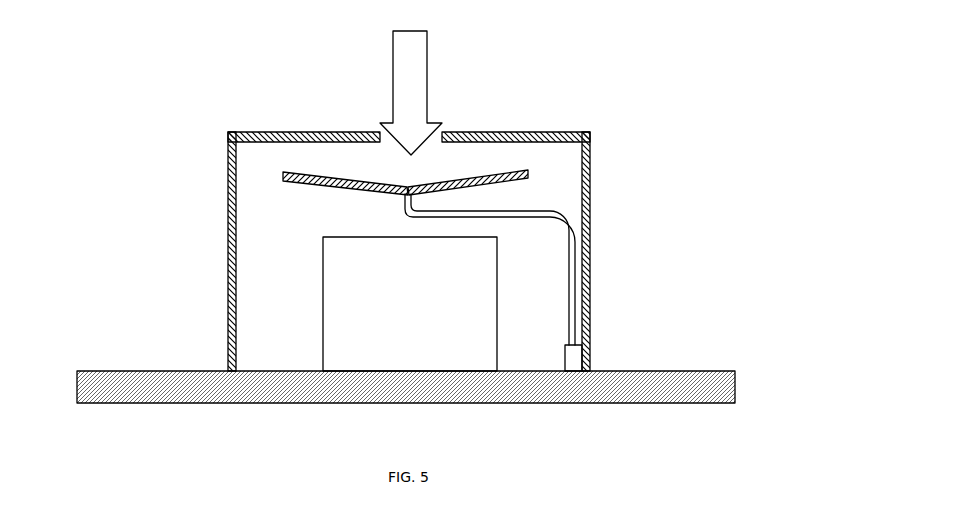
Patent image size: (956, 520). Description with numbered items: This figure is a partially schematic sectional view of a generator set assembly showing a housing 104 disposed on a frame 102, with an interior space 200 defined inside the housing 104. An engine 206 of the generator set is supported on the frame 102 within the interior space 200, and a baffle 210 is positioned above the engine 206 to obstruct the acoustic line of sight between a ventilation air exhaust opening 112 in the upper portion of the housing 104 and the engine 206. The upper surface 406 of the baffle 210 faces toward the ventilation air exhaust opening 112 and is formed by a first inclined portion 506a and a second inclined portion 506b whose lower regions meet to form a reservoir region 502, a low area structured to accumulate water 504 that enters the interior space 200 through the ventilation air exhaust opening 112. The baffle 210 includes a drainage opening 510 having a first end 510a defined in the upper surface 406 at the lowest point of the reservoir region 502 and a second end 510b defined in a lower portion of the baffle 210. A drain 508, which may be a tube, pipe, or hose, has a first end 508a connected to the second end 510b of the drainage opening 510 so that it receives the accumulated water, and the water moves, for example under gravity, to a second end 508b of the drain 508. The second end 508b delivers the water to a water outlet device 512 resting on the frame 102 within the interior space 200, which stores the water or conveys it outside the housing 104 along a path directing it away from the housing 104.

The frame 102 is at (737, 390).
The housing 104 is at (253, 50).
The ventilation air exhaust opening 112 is at (449, 114).
The interior space 200 is at (240, 313).
The engine 206 is at (323, 352).
The baffle 210 is at (343, 196).
The upper surface 406 is at (316, 166).
The reservoir region 502 is at (415, 166).
The water 504 is at (424, 94).
The first inclined portion 506a is at (488, 176).
The second inclined portion 506b is at (297, 170).
The drain 508 is at (577, 265).
The first end 508a is at (413, 198).
The second end 508b is at (578, 337).
The drainage opening 510 is at (385, 152).
The first end 510a is at (409, 168).
The second end 510b is at (403, 197).
The water outlet device 512 is at (582, 358).